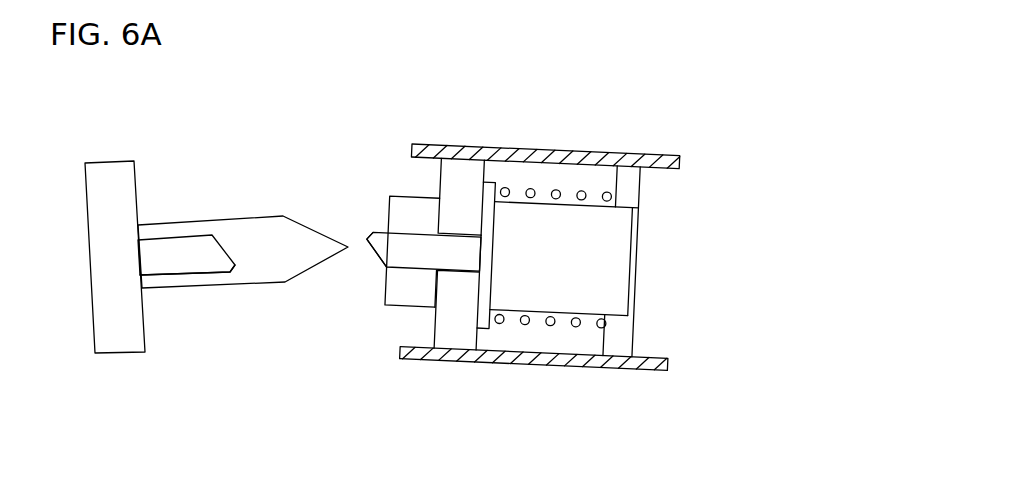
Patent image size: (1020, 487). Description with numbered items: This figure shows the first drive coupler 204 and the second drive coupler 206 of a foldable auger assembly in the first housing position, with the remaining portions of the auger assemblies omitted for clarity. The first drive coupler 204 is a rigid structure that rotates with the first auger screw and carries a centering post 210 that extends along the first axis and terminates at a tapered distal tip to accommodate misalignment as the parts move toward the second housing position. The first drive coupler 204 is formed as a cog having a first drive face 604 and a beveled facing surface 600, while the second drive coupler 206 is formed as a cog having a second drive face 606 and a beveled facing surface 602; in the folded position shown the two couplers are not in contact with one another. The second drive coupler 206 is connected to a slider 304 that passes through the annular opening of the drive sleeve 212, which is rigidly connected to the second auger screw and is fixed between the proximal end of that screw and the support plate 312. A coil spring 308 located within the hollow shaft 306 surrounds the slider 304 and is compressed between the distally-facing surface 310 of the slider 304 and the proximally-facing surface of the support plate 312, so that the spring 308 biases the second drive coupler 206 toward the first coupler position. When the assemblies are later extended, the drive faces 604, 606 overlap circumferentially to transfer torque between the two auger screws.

The first drive coupler 204 is at (160, 245).
The centering post 210 is at (277, 272).
The facing surface of the first drive coupler 600 is at (227, 250).
The first drive face 604 is at (218, 273).
The second drive face 606 is at (386, 230).
The facing surface of the second drive coupler 602 is at (382, 257).
The second drive coupler 206 is at (415, 257).
The drive sleeve 212 is at (467, 187).
The slider 304 is at (417, 297).
The distally-facing surface 310 is at (497, 213).
The coil spring 308 is at (522, 326).
The support plate 312 is at (630, 195).
The hollow shaft 306 is at (597, 368).